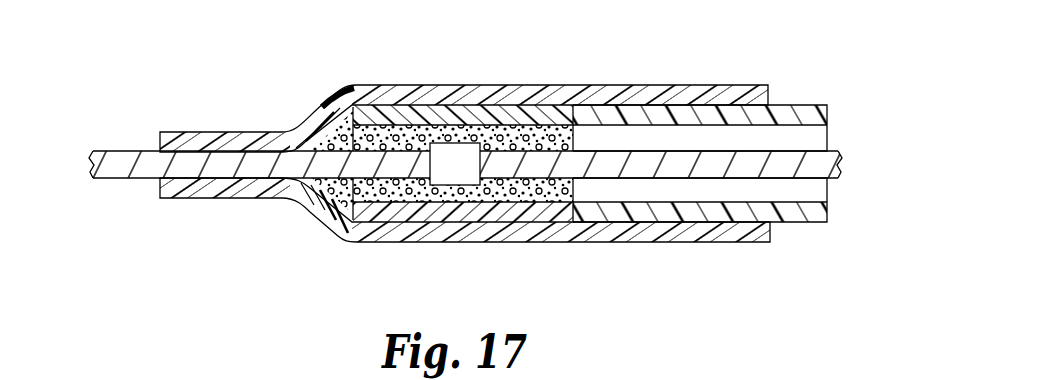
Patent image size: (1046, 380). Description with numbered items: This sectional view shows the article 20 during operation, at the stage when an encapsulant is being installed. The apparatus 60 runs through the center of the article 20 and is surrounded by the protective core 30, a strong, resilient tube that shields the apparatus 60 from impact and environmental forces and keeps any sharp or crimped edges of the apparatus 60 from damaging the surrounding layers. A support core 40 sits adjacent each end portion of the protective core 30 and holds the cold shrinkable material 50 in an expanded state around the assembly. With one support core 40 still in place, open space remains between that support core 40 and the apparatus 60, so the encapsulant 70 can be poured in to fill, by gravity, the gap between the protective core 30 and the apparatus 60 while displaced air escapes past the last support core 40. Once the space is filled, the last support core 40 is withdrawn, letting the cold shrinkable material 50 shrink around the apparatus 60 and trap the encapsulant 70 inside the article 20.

The article 20 is at (465, 148).
The protective core 30 is at (452, 113).
The support core 40 is at (802, 113).
The cold shrinkable material 50 is at (268, 135).
The apparatus 60 is at (453, 172).
The encapsulant 70 is at (316, 202).